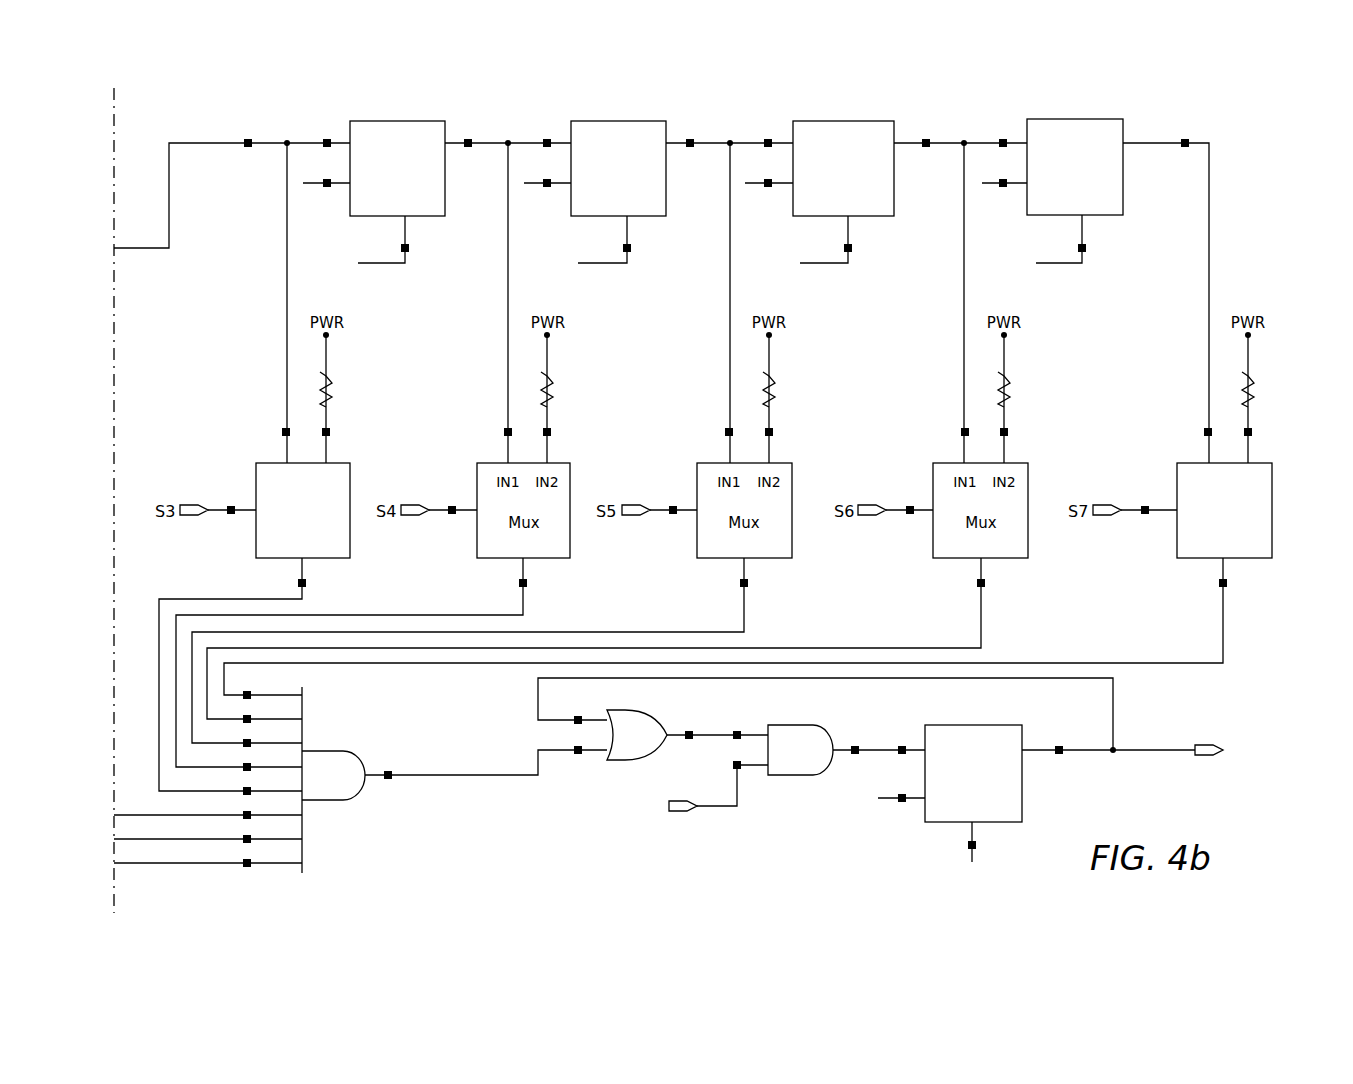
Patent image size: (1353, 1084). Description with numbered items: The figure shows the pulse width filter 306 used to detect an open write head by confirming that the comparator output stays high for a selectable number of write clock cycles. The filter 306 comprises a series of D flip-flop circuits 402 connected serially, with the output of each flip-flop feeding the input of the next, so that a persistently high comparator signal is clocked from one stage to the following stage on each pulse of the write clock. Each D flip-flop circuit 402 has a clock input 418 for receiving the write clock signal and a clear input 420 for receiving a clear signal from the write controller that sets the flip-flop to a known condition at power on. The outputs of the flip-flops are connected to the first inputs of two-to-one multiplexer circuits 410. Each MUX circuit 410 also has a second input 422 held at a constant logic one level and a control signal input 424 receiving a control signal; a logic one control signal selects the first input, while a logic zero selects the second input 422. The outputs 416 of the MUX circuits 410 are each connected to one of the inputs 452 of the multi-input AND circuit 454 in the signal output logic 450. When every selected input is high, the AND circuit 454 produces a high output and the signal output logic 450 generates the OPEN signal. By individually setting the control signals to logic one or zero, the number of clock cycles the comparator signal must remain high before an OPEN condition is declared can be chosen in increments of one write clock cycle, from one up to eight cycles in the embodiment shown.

The pulse width filter 306 is at (685, 112).
The D flip-flop circuit 402 is at (445, 183).
The 2 to 1 multiplexer circuit 410 is at (256, 548).
The output of the MUX circuit 416 is at (1226, 573).
The clock input 418 is at (991, 184).
The clear input 420 is at (1083, 229).
The second input IN2 422 is at (1249, 447).
The control signal input 424 is at (1133, 513).
The signal output logic 450 is at (584, 821).
The inputs of the AND circuit 452 is at (288, 870).
The n+1 input AND circuit 454 is at (360, 753).